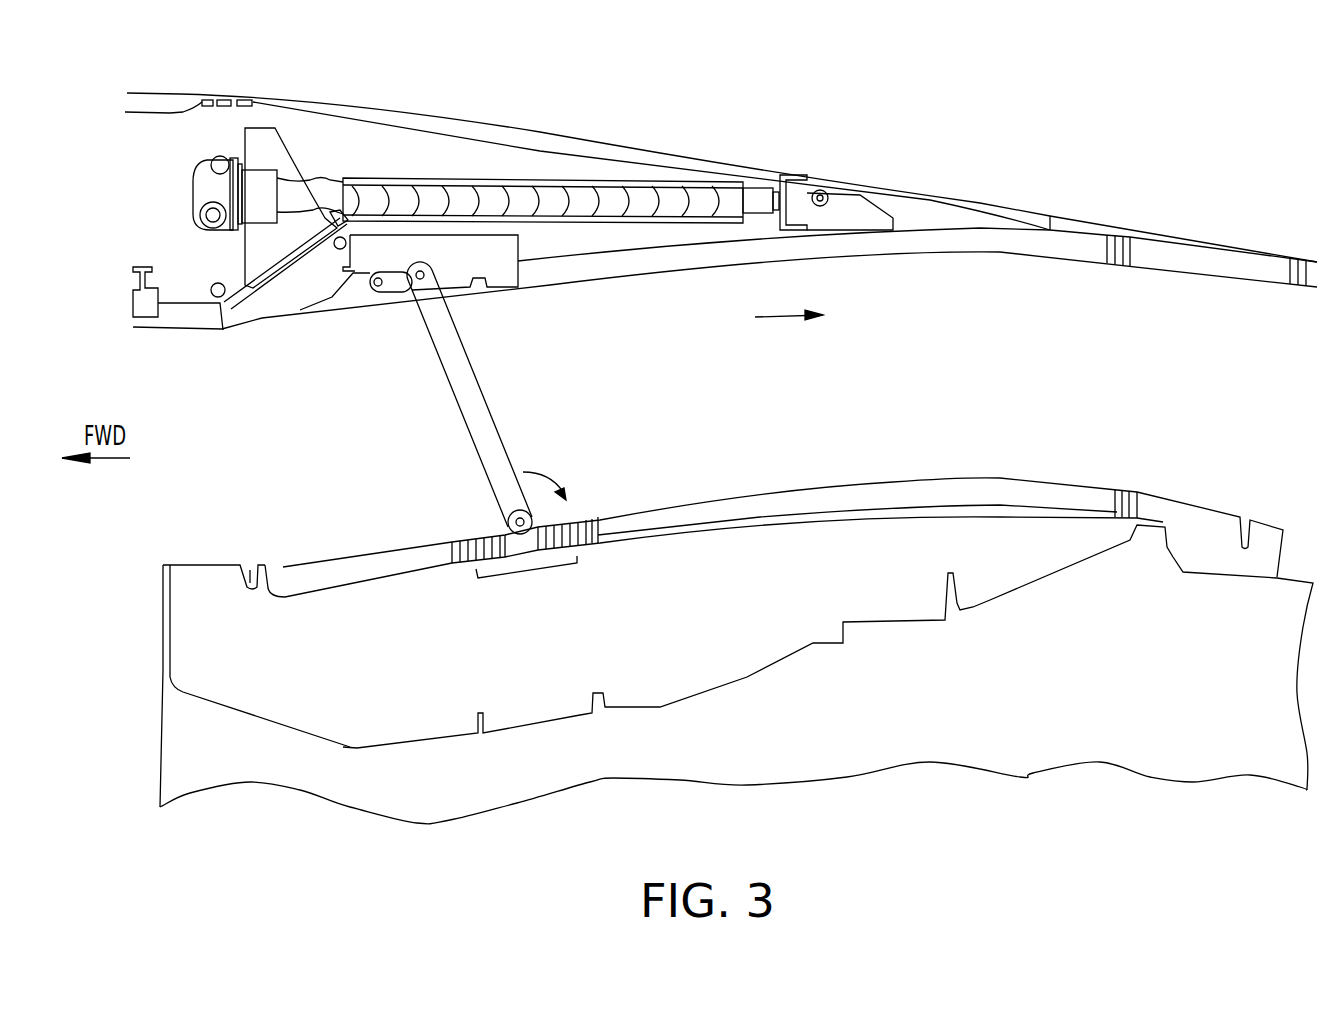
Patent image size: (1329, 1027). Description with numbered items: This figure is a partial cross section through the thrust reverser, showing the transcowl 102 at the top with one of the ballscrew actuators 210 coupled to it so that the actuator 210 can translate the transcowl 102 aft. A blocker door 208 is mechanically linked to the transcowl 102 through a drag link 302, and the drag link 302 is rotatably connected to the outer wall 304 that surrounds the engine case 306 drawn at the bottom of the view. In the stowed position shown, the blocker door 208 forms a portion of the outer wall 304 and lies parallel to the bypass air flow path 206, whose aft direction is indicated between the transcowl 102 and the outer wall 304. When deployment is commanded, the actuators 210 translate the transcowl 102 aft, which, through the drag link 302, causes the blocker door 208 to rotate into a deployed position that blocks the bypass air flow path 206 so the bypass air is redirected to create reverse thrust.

The transcowl 102 is at (612, 142).
The bypass air flow path 206 is at (783, 318).
The blocker door 208 is at (354, 315).
The actuator 210 is at (198, 185).
The drag link 302 is at (483, 402).
The outer wall 304 is at (732, 497).
The engine case 306 is at (380, 747).